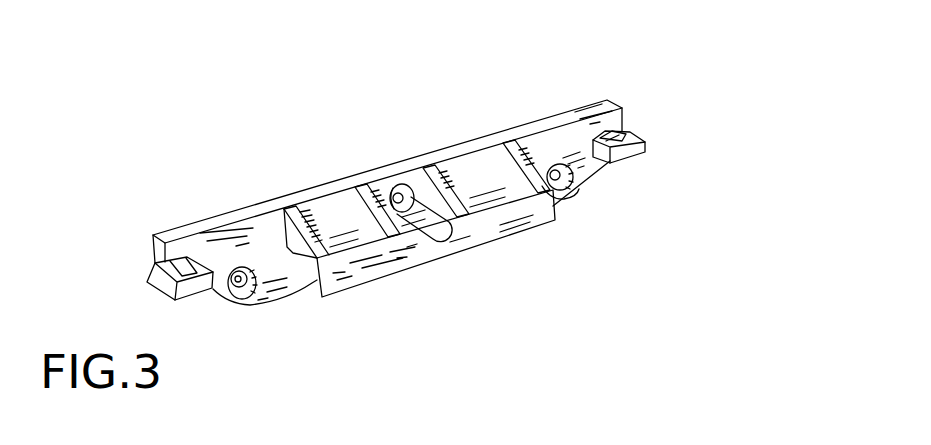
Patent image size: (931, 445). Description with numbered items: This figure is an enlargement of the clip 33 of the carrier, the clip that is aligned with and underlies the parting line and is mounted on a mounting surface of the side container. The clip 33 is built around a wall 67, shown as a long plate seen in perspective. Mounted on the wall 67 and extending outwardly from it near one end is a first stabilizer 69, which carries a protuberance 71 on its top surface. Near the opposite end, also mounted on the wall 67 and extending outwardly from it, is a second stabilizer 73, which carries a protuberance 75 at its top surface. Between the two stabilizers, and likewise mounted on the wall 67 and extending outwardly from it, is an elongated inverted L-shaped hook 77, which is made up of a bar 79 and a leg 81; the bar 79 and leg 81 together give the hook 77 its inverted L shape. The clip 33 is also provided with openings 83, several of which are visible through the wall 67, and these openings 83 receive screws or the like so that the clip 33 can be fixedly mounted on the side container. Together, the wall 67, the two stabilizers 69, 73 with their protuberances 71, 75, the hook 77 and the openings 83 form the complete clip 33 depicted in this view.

The clip 33 is at (701, 259).
The wall 67 is at (560, 142).
The first stabilizer 69 is at (627, 152).
The protuberance 71 is at (622, 132).
The second stabilizer 73 is at (195, 288).
The protuberance 75 is at (189, 264).
The inverted L-shaped hook 77 is at (484, 237).
The bar 79 is at (308, 290).
The leg 81 is at (290, 247).
The openings 83 is at (412, 195).